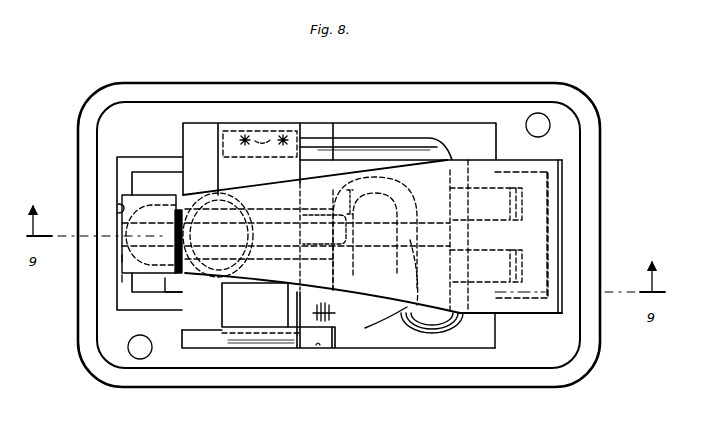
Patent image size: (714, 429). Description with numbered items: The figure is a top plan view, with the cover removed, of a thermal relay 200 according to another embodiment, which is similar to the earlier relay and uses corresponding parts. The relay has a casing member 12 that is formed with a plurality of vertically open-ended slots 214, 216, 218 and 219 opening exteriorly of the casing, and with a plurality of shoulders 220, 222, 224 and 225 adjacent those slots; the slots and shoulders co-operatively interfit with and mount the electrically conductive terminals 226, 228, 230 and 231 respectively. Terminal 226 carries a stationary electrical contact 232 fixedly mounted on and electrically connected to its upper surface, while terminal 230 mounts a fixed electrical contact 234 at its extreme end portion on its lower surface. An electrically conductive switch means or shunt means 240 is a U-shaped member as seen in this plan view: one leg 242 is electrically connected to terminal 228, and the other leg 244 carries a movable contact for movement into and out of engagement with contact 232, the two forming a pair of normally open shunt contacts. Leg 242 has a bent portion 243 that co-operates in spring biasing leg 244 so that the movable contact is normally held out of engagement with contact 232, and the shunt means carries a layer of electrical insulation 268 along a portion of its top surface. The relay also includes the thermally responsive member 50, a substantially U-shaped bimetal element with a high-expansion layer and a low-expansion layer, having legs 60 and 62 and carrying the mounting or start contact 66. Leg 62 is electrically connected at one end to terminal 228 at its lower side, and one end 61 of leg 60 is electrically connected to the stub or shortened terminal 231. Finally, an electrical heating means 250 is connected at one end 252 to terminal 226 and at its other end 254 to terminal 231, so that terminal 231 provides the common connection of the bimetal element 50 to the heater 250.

The thermal relay 200 is at (604, 82).
The casing member 12 is at (592, 157).
The slot 218 is at (562, 197).
The terminal 230 is at (552, 222).
The shoulder 224 is at (522, 168).
The thermally responsive member 50 is at (483, 186).
The leg 60 is at (418, 183).
The leg 62 is at (418, 292).
The switch means or shunt means 240 is at (365, 330).
The electrical heating means 250 is at (436, 323).
The bent portion 243 is at (341, 312).
The slot 216 is at (318, 346).
The terminal 228 is at (237, 337).
The leg 242 is at (241, 308).
The fixed electrical contact 234 is at (240, 262).
The leg 244 is at (326, 236).
The start contact 66 is at (250, 210).
The end of leg 61 is at (224, 197).
The layer of electrical insulation 268 is at (180, 206).
The end of heating means 252 is at (152, 215).
The shoulder 225 is at (193, 146).
The shoulder 220 is at (142, 178).
The slot 214 is at (120, 207).
The stationary electrical contact 232 is at (125, 262).
The terminal 226 is at (123, 282).
The shoulder 222 is at (195, 318).
The slot 219 is at (232, 124).
The stub or shortened terminal 231 is at (255, 128).
The end of heating means 254 is at (278, 125).